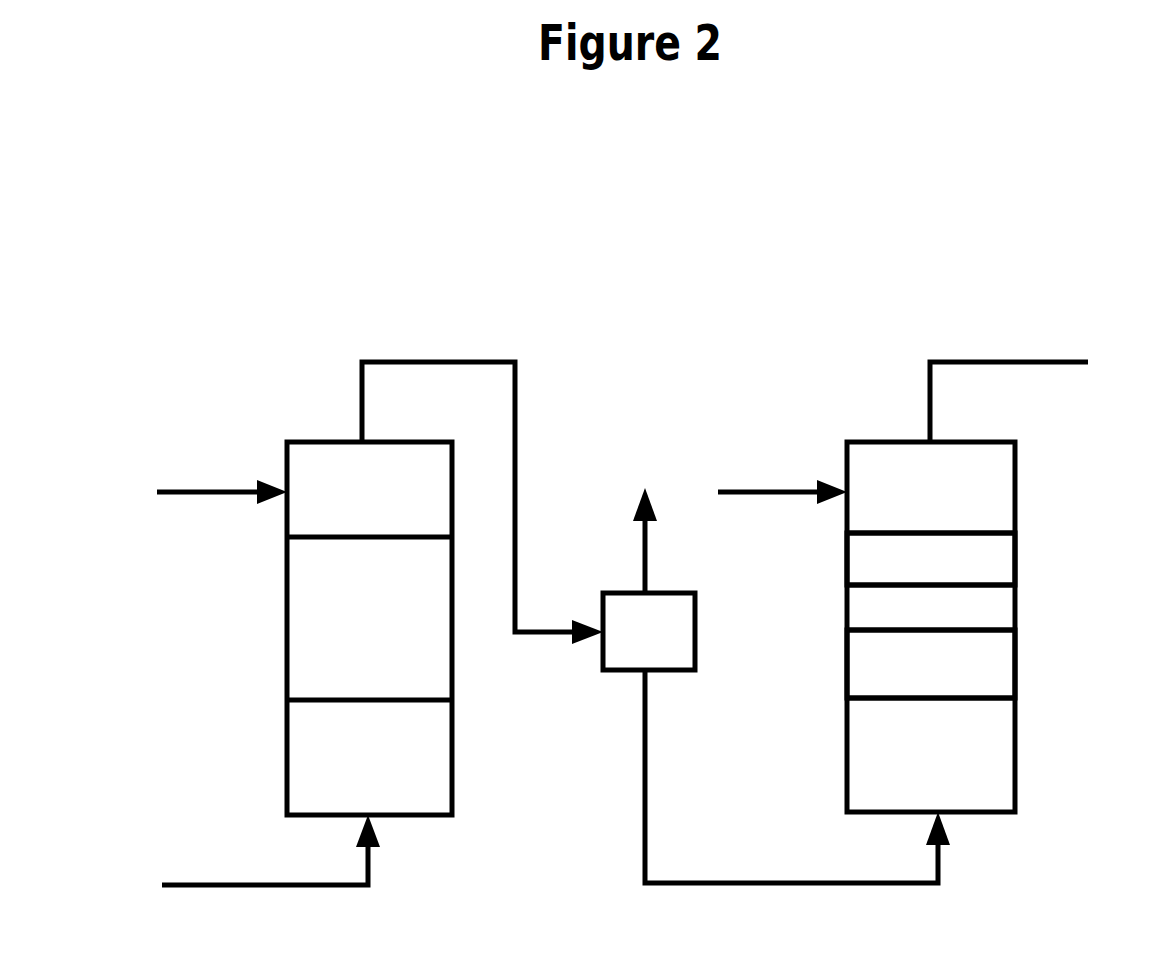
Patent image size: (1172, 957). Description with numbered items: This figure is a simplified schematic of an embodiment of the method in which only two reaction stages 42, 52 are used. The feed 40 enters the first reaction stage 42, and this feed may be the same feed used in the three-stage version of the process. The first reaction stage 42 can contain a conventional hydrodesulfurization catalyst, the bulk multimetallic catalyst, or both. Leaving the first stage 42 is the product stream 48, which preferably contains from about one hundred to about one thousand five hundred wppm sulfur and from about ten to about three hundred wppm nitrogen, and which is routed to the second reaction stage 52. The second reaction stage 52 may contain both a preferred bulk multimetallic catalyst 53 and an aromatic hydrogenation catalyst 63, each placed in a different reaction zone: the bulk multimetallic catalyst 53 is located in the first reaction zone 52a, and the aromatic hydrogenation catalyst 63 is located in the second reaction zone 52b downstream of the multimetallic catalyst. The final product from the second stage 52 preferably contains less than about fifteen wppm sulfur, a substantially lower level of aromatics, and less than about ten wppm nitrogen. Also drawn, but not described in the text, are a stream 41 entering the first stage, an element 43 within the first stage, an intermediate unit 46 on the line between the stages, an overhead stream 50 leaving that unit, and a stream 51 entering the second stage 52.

The feed 40 is at (190, 885).
The inlet stream to first reactor 41 is at (178, 492).
The first reaction stage 42 is at (383, 442).
The first reactor 43 is at (369, 628).
The separator 46 is at (697, 627).
The product stream 48 is at (755, 883).
The separator overhead stream 50 is at (643, 542).
The inlet stream to second reactor 51 is at (782, 473).
The second reaction stage 52 is at (967, 442).
The first reaction zone 52a is at (1015, 662).
The second reaction zone 52b is at (1015, 548).
The bulk multimetallic catalyst 53 is at (931, 664).
The aromatic hydrogenation catalyst 63 is at (931, 559).